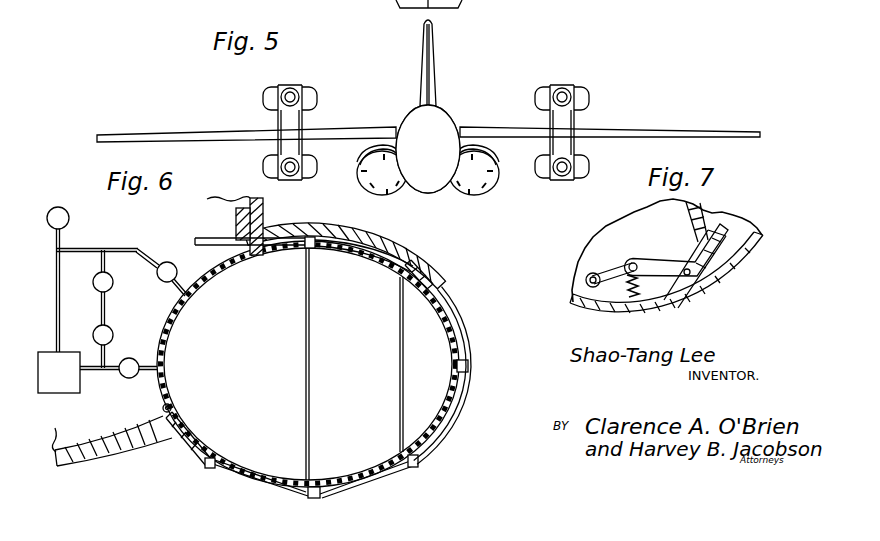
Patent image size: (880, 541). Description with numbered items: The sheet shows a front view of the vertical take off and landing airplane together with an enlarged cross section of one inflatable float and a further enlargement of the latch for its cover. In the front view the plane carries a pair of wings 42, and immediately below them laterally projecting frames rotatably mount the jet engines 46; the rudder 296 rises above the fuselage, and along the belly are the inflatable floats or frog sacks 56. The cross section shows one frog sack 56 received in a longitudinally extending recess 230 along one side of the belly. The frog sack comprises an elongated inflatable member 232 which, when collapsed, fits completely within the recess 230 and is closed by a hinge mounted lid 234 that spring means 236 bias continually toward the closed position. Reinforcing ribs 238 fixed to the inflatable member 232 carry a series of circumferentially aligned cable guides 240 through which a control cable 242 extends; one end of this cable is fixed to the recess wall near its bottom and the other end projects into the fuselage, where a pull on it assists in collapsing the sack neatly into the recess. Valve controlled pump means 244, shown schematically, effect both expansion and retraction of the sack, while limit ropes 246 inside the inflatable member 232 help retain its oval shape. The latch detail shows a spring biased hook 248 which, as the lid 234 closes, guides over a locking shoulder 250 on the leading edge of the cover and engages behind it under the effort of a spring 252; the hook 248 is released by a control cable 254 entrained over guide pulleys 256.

In FIG. 5, the wings 42 is at (632, 125).
In FIG. 5, the jet engines 46 is at (558, 78).
In FIG. 5, the frog sacks 56 is at (497, 192).
In FIG. 6, the frog sacks 56 is at (441, 436).
In FIG. 5, the rudder 296 is at (432, 50).
In FIG. 6, the recess 230 is at (178, 341).
In FIG. 6, the inflatable member 232 is at (350, 473).
In FIG. 6, the lid 234 is at (402, 252).
In FIG. 7, the lid 234 is at (754, 238).
In FIG. 6, the spring means 236 is at (263, 223).
In FIG. 6, the reinforcing ribs 238 is at (210, 449).
In FIG. 6, the cable guides 240 is at (466, 373).
In FIG. 6, the control cable 242 is at (197, 240).
In FIG. 6, the valve controlled pump means 244 is at (97, 384).
In FIG. 6, the limit ropes 246 is at (401, 353).
In FIG. 7, the spring biased hook 248 is at (720, 243).
In FIG. 7, the locking shoulder 250 is at (727, 241).
In FIG. 7, the spring 252 is at (643, 287).
In FIG. 7, the control cable 254 is at (572, 265).
In FIG. 7, the guide pulleys 256 is at (571, 293).